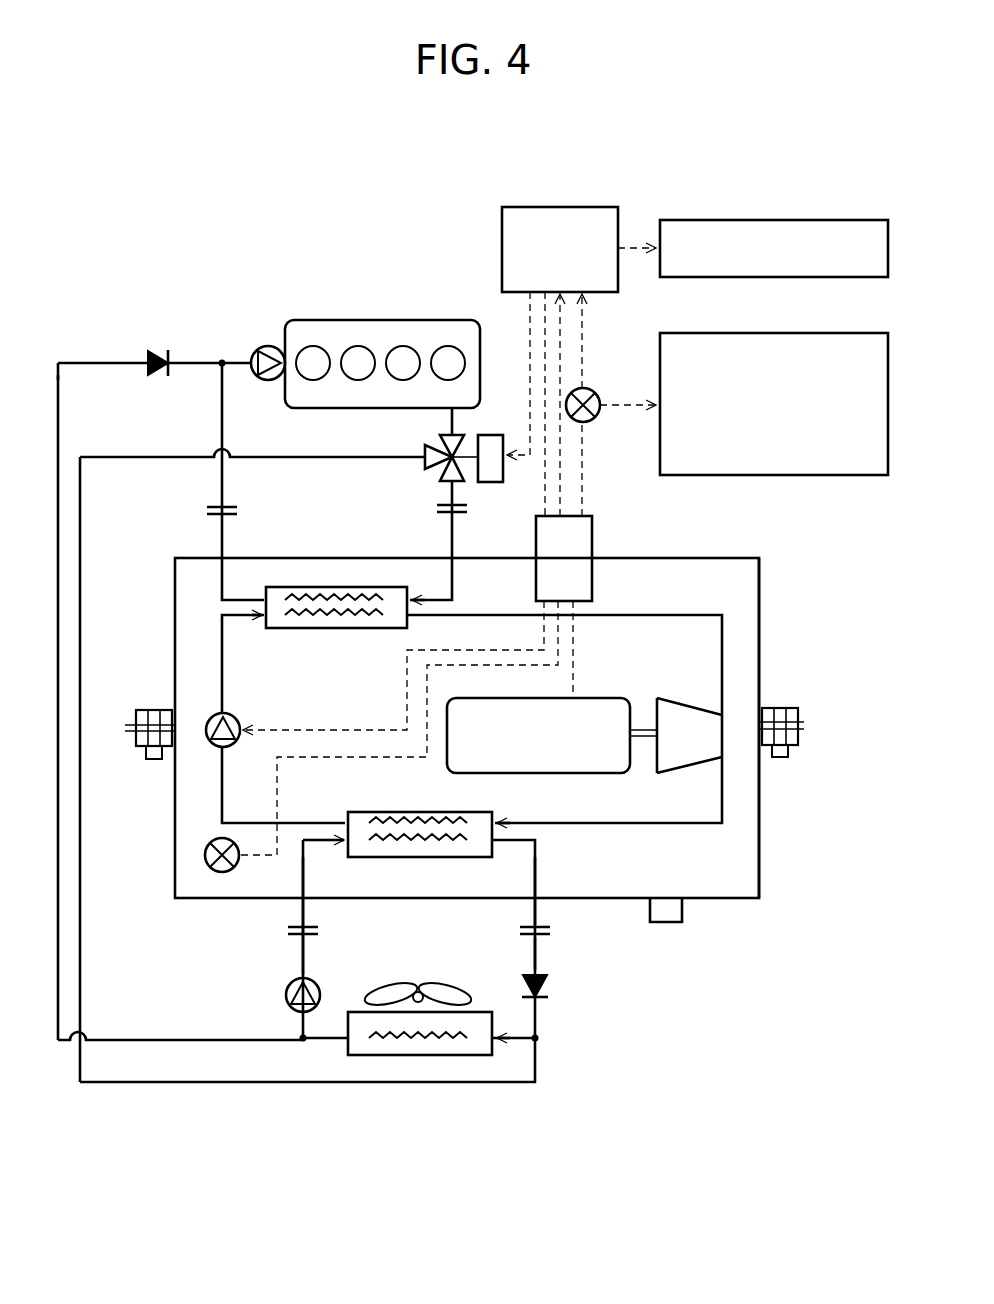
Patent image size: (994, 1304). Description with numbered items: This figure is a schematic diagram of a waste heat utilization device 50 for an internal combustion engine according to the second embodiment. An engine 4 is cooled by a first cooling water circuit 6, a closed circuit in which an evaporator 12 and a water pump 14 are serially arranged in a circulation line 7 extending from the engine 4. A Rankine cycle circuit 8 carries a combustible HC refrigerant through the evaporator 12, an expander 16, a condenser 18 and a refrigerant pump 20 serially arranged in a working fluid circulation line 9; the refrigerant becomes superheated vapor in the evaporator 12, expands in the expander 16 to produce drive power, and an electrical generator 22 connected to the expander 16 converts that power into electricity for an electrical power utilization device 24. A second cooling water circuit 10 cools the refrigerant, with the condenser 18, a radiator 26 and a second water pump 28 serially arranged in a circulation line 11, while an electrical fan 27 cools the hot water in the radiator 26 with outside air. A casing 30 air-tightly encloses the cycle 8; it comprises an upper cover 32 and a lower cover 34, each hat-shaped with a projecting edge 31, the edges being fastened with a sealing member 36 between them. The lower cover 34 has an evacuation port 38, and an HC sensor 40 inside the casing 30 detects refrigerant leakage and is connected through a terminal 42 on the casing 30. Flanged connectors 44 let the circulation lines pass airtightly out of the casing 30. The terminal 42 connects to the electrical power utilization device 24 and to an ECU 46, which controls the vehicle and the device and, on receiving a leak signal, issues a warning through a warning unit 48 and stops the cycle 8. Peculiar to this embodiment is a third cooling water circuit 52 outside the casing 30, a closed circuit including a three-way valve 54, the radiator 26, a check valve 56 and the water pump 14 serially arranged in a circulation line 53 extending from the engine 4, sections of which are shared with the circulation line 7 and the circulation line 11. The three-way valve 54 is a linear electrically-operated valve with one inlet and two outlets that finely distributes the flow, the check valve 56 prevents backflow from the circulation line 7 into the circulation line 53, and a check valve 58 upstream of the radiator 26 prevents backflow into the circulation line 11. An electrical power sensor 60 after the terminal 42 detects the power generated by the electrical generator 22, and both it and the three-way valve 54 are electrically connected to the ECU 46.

The engine 4 is at (336, 318).
The first cooling water circuit 6 is at (218, 430).
The circulation line 7 is at (224, 406).
The Rankine cycle circuit 8 is at (218, 632).
The working fluid circulation line 9 is at (224, 777).
The second cooling water circuit 10 is at (540, 957).
The circulation line 11 is at (305, 958).
The evaporator 12 is at (376, 629).
The water pump 14 is at (270, 346).
The expander 16 is at (693, 742).
The condenser 18 is at (392, 810).
The refrigerant pump 20 is at (234, 714).
The electrical generator 22 is at (604, 696).
The electrical power utilization device 24 is at (835, 476).
The radiator 26 is at (430, 1056).
The electrical fan 27 is at (420, 988).
The second water pump 28 is at (286, 990).
The casing 30 is at (762, 662).
The projecting edge 31 is at (128, 714).
The upper cover 32 is at (760, 623).
The lower cover 34 is at (760, 828).
The sealing member 36 is at (806, 725).
The evacuation port 38 is at (668, 924).
The HC sensor 40 is at (212, 838).
The terminal 42 is at (600, 535).
The flanged connector 44 is at (208, 511).
The electronic control unit 46 is at (532, 206).
The warning unit 48 is at (842, 220).
The waste heat utilization device 50 is at (198, 293).
The third cooling water circuit 52 is at (62, 946).
The circulation line 53 is at (80, 872).
The three-way valve 54 is at (490, 483).
The check valve 56 is at (160, 348).
The check valve 58 is at (548, 987).
The electrical power sensor 60 is at (595, 418).